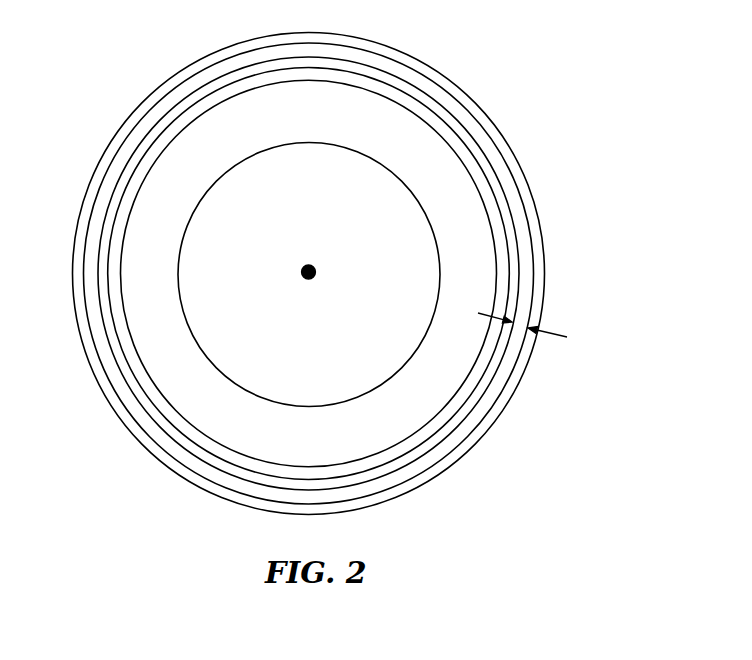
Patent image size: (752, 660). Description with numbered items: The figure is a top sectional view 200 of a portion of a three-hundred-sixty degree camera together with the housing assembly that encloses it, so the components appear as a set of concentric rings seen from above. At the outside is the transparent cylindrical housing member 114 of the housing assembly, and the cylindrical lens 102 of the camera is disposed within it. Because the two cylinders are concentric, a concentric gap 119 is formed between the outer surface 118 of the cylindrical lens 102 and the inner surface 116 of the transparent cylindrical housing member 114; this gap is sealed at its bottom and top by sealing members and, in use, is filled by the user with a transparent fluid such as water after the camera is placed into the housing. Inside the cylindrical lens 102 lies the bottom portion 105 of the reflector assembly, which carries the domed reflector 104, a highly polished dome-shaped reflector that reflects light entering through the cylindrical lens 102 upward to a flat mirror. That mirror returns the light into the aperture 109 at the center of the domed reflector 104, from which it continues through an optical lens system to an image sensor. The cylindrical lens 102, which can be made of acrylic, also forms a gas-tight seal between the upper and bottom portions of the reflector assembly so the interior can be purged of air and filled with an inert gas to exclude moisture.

The top sectional view 200 is at (98, 70).
The transparent cylindrical housing member 114 is at (521, 148).
The inner surface 116 is at (530, 222).
The outer surface 118 is at (518, 255).
The cylindrical lens 102 is at (473, 177).
The bottom portion 105 is at (286, 130).
The concentric gap 119 is at (545, 335).
The domed reflector 104 is at (203, 199).
The aperture 109 is at (318, 275).